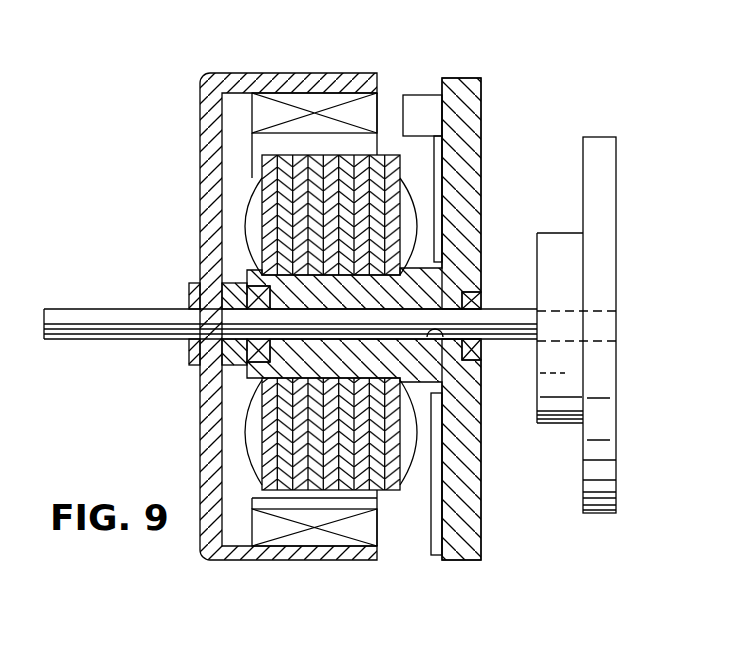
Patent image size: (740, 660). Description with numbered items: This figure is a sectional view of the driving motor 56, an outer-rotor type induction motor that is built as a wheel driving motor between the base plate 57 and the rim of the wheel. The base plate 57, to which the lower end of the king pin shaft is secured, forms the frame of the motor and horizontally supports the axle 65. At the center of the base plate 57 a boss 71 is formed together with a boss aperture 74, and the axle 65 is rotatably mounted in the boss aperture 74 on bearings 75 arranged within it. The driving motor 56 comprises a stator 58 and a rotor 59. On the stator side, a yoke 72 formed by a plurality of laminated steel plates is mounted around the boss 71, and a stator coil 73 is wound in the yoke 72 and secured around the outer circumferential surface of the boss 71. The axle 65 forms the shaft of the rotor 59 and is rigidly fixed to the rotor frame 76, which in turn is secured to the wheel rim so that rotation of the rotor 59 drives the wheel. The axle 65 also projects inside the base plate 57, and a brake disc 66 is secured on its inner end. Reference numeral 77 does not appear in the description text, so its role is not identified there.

The driving motor 56 is at (153, 100).
The base plate 57 is at (475, 113).
The stator 58 is at (428, 82).
The rotor 59 is at (173, 160).
The axle 65 is at (80, 330).
The brake disc 66 is at (607, 142).
The boss 71 is at (440, 285).
The yoke 72 is at (282, 184).
The stator coil 73 is at (243, 222).
The boss aperture 74 is at (440, 342).
The bearings 75 is at (243, 372).
The rotor frame 76 is at (212, 463).
The coil 77 is at (313, 537).